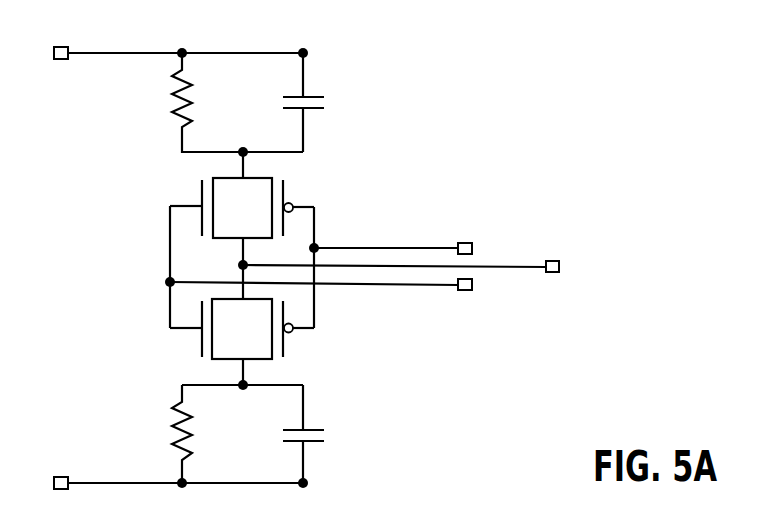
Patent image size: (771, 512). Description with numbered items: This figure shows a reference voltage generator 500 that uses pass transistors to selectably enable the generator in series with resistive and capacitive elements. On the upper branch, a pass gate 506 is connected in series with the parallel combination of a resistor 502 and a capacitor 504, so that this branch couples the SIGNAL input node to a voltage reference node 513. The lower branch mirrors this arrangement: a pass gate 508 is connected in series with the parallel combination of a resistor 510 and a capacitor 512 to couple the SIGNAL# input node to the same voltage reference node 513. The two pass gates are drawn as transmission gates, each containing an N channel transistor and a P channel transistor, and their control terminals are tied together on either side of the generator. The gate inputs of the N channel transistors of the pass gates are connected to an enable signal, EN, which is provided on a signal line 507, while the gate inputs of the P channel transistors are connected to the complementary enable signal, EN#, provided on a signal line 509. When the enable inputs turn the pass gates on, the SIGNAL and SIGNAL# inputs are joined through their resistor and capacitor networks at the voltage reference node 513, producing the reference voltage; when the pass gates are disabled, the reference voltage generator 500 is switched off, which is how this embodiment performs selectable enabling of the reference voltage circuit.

The reference voltage generator 500 is at (110, 336).
The resistor 502 is at (198, 103).
The capacitor 504 is at (332, 103).
The pass gate 506 is at (258, 240).
The signal line 507 is at (510, 295).
The pass gate 508 is at (259, 360).
The signal line 509 is at (537, 237).
The resistor 510 is at (204, 428).
The capacitor 512 is at (330, 437).
The voltage reference node 513 is at (634, 259).